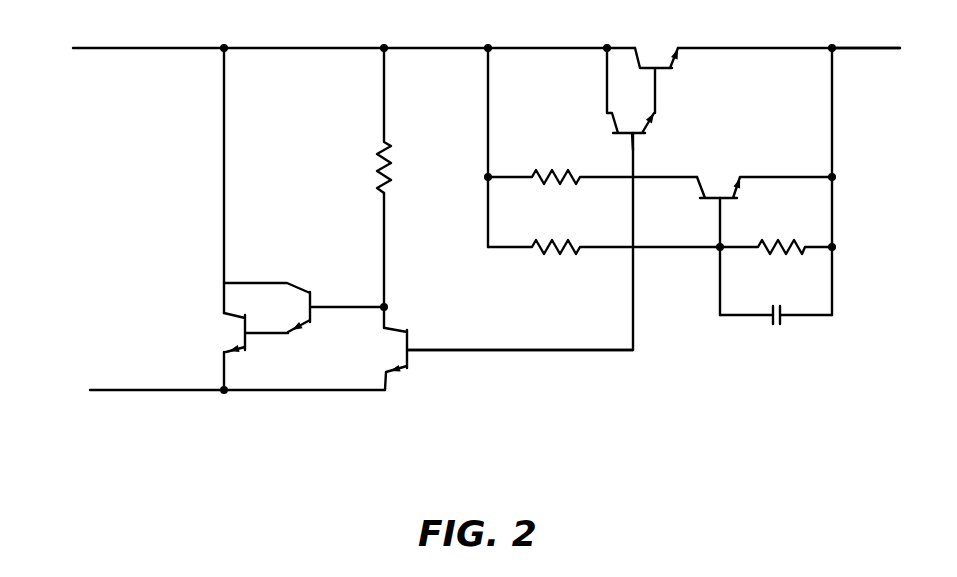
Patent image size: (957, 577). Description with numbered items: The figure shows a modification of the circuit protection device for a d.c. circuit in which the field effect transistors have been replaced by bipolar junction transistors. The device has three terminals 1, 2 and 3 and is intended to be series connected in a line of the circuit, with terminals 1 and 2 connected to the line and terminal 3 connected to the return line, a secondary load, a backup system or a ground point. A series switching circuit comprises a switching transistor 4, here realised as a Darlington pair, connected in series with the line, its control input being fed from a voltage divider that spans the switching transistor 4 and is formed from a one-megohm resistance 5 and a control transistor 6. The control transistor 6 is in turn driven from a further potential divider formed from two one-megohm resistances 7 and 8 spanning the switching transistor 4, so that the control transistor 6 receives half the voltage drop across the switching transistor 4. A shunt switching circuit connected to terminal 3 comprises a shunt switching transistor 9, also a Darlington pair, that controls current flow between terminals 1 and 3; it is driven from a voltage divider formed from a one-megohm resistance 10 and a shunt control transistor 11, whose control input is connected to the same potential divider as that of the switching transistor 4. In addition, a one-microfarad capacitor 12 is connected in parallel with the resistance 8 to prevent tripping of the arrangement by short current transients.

The terminal 1 is at (122, 47).
The terminal 2 is at (847, 46).
The terminal 3 is at (135, 390).
The switching transistor 4 is at (649, 131).
The resistance 5 is at (555, 168).
The control transistor 6 is at (713, 196).
The resistance 7 is at (551, 240).
The resistance 8 is at (790, 250).
The shunt switching transistor 9 is at (226, 322).
The resistance 10 is at (383, 168).
The shunt control transistor 11 is at (408, 338).
The capacitor 12 is at (781, 322).